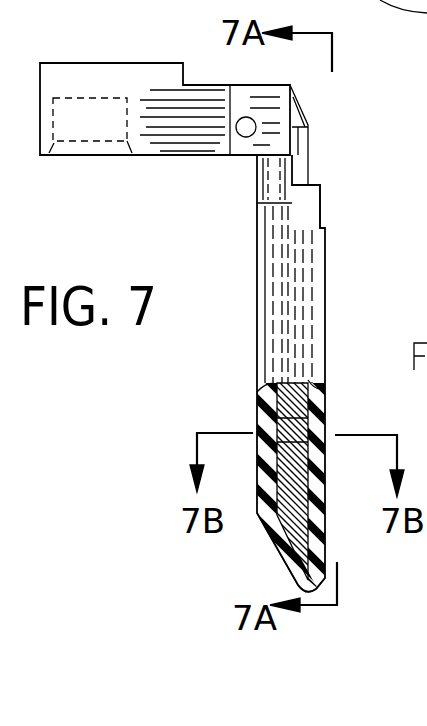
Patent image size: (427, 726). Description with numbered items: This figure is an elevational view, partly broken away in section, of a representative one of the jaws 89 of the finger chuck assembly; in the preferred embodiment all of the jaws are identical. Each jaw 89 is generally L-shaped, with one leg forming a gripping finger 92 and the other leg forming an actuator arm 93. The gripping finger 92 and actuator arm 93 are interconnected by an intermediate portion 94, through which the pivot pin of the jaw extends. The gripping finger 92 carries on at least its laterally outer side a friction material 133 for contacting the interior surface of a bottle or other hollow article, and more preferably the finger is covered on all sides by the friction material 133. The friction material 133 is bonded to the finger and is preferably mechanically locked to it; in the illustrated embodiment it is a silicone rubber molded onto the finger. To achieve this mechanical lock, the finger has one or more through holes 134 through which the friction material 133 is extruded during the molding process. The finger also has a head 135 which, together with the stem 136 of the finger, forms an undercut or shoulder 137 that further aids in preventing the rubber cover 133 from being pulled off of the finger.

The actuator arm 93 is at (63, 63).
The intermediate portion 94 is at (272, 85).
The jaw 89 is at (372, 183).
The gripping finger 92 is at (325, 310).
The friction material 133 is at (260, 402).
The through holes 134 is at (327, 428).
The stem 136 is at (296, 387).
The undercut or shoulder 137 is at (258, 478).
The head 135 is at (306, 545).